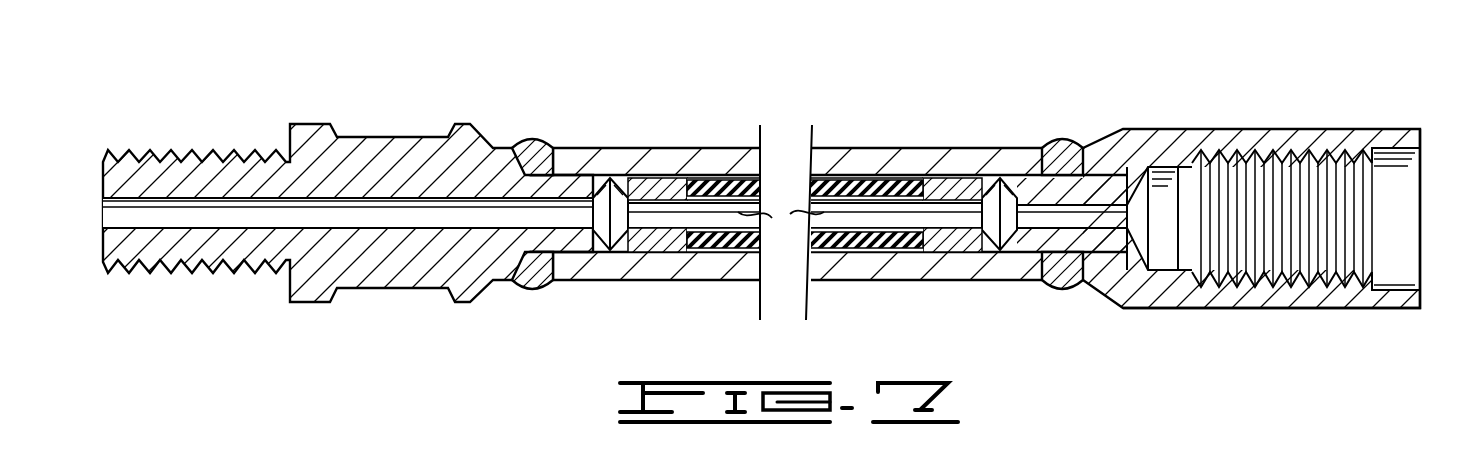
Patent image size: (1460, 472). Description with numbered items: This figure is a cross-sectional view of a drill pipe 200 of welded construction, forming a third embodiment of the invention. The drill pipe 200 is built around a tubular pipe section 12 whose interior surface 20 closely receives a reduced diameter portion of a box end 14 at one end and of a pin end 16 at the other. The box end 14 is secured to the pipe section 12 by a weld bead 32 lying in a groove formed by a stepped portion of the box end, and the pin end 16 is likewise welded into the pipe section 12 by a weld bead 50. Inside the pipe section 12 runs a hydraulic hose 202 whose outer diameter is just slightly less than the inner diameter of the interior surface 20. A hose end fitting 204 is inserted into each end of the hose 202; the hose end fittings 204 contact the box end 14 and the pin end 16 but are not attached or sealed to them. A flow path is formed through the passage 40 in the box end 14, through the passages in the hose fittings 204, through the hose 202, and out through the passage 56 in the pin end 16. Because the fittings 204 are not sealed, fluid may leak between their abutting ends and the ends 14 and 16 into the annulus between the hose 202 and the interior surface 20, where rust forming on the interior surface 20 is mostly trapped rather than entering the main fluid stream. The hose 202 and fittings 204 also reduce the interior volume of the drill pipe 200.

The pipe section 12 is at (952, 272).
The box end 14 is at (1311, 312).
The pin end 16 is at (393, 295).
The interior surface 20 is at (713, 245).
The weld bead 32 is at (1065, 146).
The passage 40 is at (1117, 218).
The weld bead 50 is at (537, 293).
The passage 56 is at (390, 210).
The drill pipe 200 is at (1218, 118).
The hydraulic hose 202 is at (870, 190).
The hose end fitting 204 is at (652, 242).